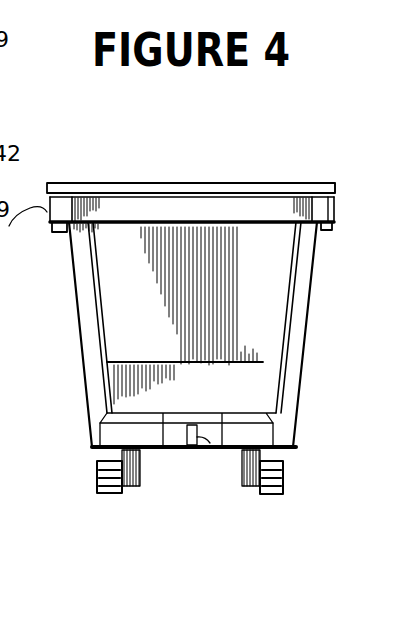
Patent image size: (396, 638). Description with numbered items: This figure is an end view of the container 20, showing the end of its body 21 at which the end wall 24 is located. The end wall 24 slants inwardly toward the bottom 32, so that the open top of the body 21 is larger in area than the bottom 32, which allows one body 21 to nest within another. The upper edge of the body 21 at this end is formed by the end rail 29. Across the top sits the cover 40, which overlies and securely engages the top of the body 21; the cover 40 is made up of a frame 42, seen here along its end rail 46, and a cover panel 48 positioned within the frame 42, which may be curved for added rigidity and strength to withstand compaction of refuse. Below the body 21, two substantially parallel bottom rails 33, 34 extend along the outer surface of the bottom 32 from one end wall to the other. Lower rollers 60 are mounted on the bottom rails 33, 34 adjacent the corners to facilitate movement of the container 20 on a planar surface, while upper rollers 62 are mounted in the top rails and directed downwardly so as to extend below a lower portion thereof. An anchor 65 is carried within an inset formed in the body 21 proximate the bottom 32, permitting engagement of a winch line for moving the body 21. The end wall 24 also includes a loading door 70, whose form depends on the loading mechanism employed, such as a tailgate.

The container 20 is at (370, 346).
The body 21 is at (70, 374).
The end wall 24 is at (266, 289).
The end rail 29 is at (336, 204).
The bottom 32 is at (152, 437).
The bottom rail 33 is at (141, 484).
The bottom rail 34 is at (240, 486).
The cover 40 is at (228, 183).
The frame 42 is at (343, 181).
The end rail 46 is at (113, 188).
The cover panel 48 is at (183, 205).
The lower rollers 60 is at (96, 489).
The upper rollers 62 is at (60, 233).
The anchor 65 is at (214, 451).
The loading door 70 is at (195, 392).